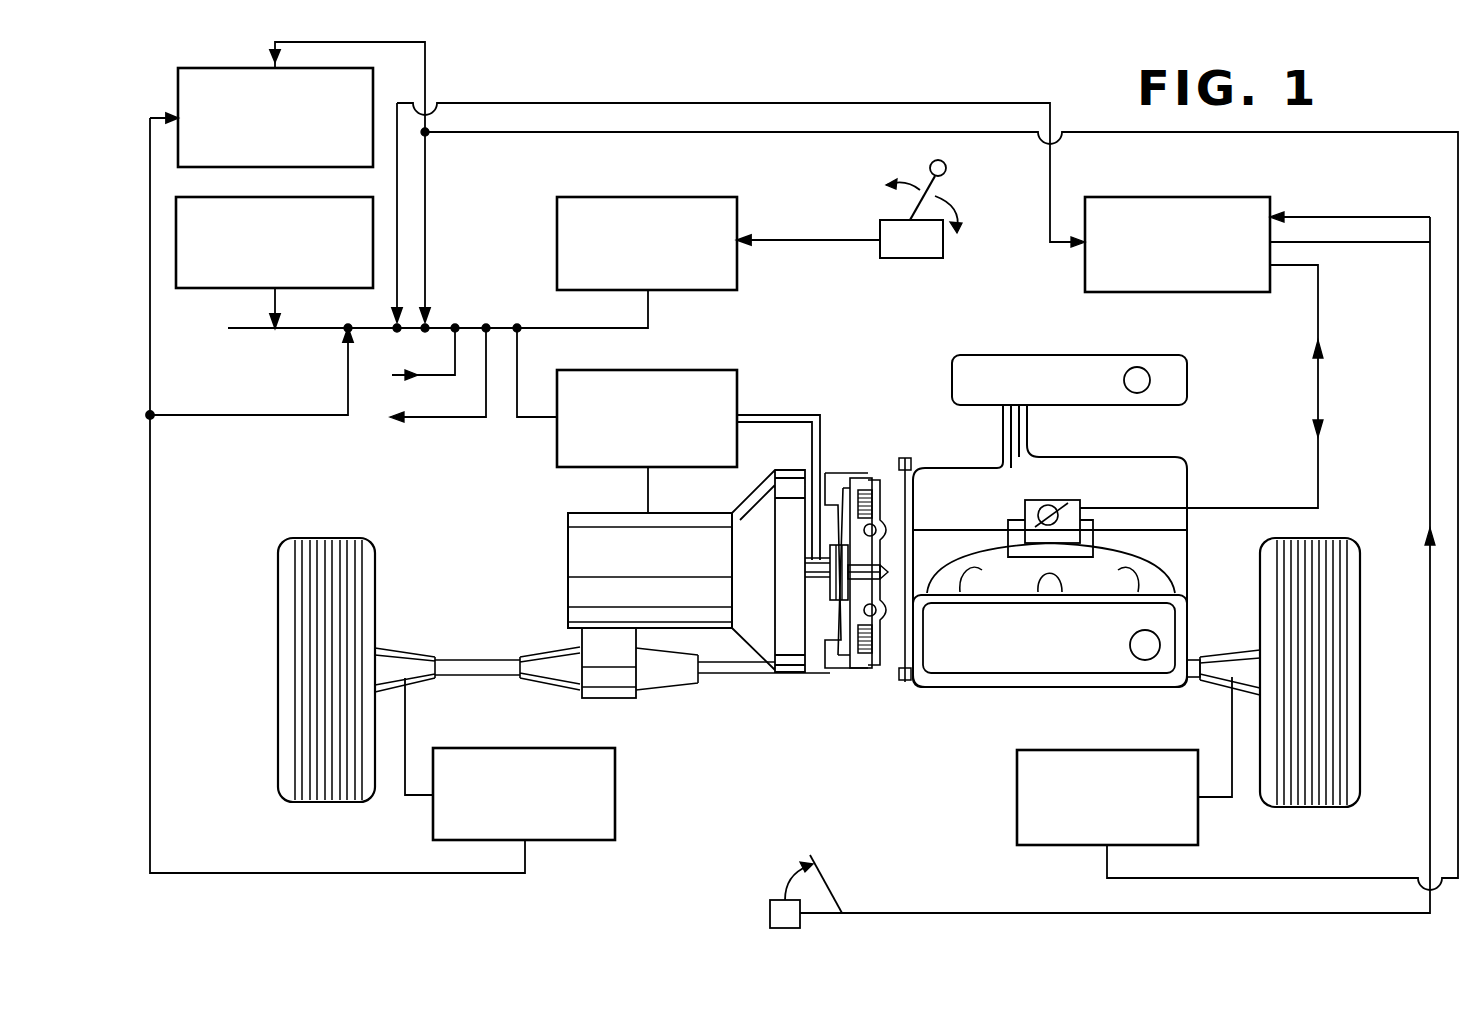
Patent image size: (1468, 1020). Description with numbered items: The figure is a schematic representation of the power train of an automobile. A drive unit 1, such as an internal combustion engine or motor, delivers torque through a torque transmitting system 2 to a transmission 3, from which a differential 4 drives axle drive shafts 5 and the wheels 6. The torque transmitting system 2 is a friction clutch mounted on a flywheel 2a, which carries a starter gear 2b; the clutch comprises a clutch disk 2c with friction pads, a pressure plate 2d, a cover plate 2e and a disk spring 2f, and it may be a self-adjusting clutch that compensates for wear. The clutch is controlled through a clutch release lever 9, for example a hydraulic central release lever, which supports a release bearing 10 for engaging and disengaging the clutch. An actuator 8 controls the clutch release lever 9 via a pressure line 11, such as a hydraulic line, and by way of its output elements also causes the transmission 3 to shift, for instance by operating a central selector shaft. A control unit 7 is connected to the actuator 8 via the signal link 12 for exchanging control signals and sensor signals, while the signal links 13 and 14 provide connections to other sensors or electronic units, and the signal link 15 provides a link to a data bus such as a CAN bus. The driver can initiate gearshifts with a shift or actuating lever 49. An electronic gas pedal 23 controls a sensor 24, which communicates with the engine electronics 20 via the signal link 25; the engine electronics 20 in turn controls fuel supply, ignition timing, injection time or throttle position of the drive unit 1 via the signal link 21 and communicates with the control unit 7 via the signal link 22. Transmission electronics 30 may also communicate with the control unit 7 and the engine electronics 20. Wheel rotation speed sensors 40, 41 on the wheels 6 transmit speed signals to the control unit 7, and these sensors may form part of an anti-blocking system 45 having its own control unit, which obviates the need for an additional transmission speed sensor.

The drive unit 1 is at (1192, 456).
The torque transmitting system 2 is at (857, 579).
The flywheel 2a is at (887, 655).
The starter gear 2b is at (908, 462).
The clutch disk 2c is at (876, 505).
The pressure plate 2d is at (855, 492).
The cover plate 2e is at (855, 670).
The disk spring 2f is at (842, 500).
The transmission 3 is at (785, 650).
The differential 4 is at (582, 688).
The axle drive shafts 5 is at (468, 665).
The wheels 6 is at (292, 615).
The control unit 7 is at (670, 197).
The actuator 8 is at (732, 387).
The clutch release lever 9 is at (812, 565).
The release bearing 10 is at (835, 600).
The pressure line 11 is at (795, 415).
The signal link 12 is at (537, 433).
The signal link 13 is at (436, 433).
The signal link 14 is at (447, 372).
The signal link 15 is at (440, 328).
The engine electronics 20 is at (1265, 205).
The signal link 21 is at (1318, 396).
The signal link 22 is at (1003, 102).
The electronic gas pedal 23 is at (832, 888).
The sensor 24 is at (770, 912).
The signal link 25 is at (1427, 508).
The transmission electronics 30 is at (212, 288).
The wheel rotation speed sensor 40 is at (612, 787).
The wheel rotation speed sensor 41 is at (1017, 792).
The anti-blocking system 45 is at (376, 103).
The actuating lever 49 is at (928, 258).